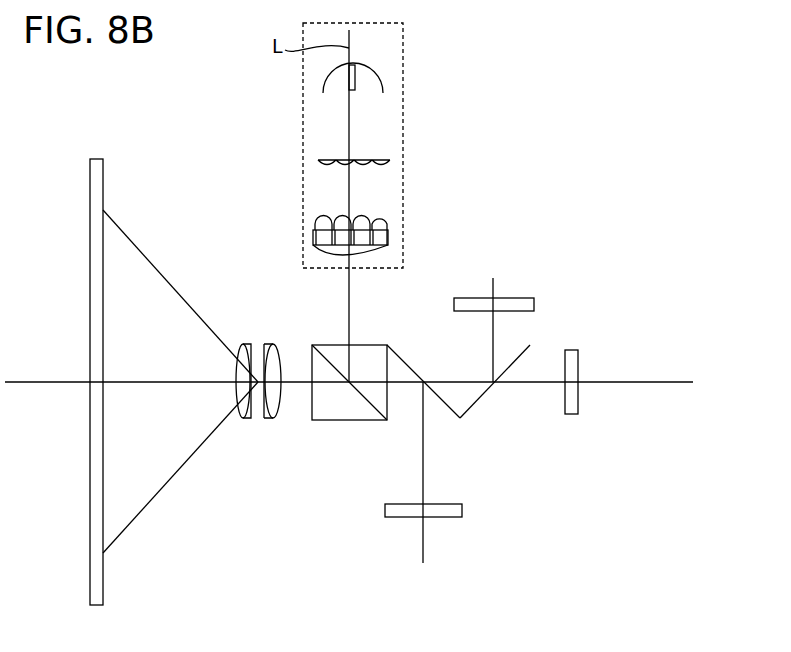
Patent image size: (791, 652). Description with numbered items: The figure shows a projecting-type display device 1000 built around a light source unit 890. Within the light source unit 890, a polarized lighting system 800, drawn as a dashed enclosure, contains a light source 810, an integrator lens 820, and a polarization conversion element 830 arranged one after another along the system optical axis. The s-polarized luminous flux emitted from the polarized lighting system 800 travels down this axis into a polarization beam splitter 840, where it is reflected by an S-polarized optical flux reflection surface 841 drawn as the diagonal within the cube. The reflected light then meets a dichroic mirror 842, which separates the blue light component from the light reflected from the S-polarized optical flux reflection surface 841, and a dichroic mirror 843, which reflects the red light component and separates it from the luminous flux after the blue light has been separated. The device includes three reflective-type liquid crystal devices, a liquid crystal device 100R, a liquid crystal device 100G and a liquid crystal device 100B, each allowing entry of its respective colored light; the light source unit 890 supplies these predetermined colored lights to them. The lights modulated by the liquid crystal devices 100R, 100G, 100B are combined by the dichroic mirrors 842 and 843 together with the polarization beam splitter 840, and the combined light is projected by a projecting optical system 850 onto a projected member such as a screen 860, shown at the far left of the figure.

The polarized lighting system 800 is at (403, 52).
The light source 810 is at (373, 70).
The integrator lens 820 is at (382, 158).
The polarization conversion element 830 is at (388, 232).
The polarization beam splitter 840 is at (322, 412).
The S-polarized optical flux reflection surface 841 is at (371, 410).
The dichroic mirror 842 is at (447, 411).
The dichroic mirror 843 is at (483, 398).
The projecting optical system 850 is at (282, 330).
The screen 860 is at (96, 578).
The light source unit 890 is at (258, 215).
The projecting-type display device 1000 is at (628, 345).
The liquid crystal device 100R is at (519, 302).
The liquid crystal device 100G is at (577, 397).
The liquid crystal device 100B is at (400, 512).